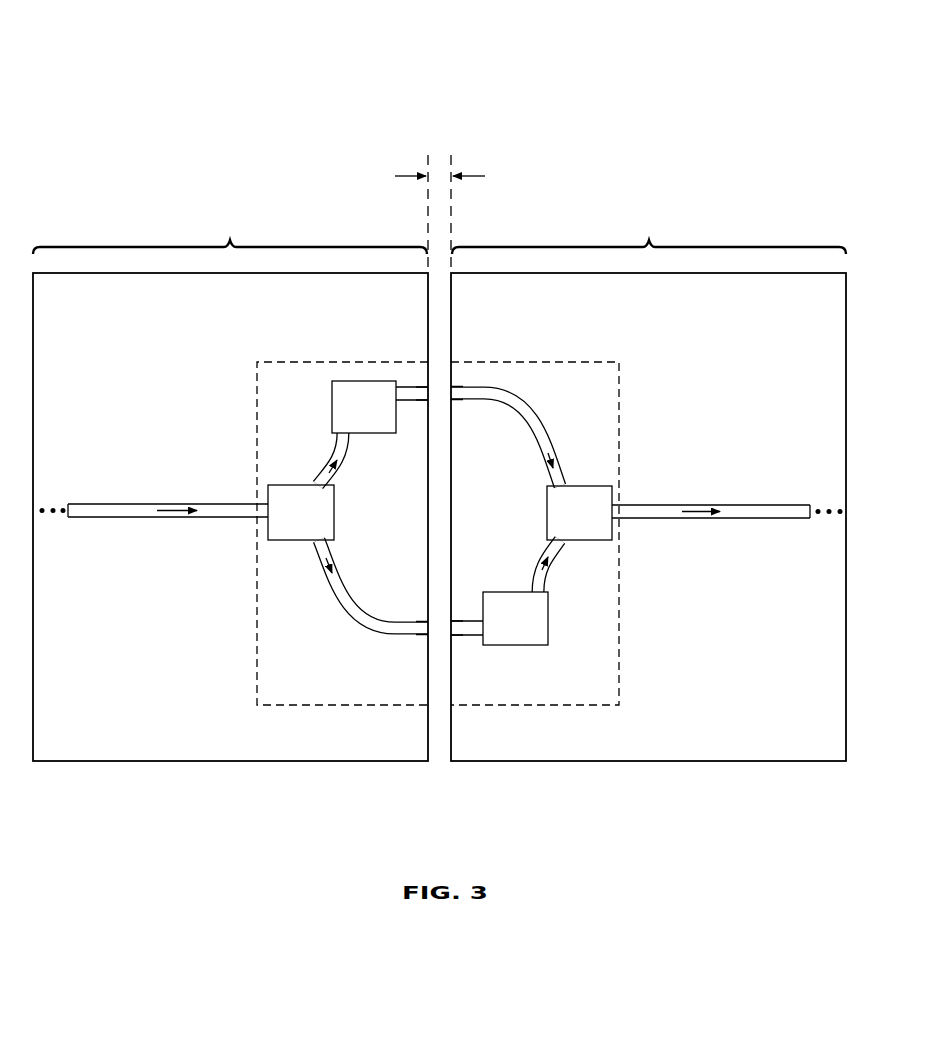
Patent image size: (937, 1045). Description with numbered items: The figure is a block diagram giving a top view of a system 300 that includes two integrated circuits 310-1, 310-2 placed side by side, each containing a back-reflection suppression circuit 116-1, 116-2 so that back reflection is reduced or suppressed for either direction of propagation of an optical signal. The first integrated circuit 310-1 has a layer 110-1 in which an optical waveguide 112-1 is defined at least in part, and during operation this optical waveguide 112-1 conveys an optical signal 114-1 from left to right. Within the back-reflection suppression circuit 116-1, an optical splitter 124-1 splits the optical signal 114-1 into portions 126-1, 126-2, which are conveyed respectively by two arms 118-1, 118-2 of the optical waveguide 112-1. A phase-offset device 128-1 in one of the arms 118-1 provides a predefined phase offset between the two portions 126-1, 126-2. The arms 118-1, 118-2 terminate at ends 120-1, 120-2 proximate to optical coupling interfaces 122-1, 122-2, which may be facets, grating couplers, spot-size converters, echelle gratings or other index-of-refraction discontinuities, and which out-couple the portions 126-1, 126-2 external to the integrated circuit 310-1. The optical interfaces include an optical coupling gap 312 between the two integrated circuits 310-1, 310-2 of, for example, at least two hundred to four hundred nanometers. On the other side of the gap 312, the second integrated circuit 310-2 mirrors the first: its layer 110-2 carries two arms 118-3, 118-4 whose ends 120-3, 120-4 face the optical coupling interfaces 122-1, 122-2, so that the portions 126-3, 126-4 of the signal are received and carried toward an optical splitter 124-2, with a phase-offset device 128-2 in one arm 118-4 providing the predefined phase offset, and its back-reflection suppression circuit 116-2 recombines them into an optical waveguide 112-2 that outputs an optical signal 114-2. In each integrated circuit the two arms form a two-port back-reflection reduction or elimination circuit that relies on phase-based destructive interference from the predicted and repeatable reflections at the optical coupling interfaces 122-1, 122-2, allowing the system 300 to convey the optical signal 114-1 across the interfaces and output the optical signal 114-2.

The system 300 is at (177, 45).
The optical coupling gap 312 is at (438, 157).
The integrated circuit 310-1 is at (230, 211).
The integrated circuit 310-2 is at (649, 211).
The layer 110-1 is at (87, 323).
The layer 110-2 is at (791, 323).
The optical waveguide 112-1 is at (135, 503).
The optical waveguide 112-2 is at (747, 504).
The optical signal 114-1 is at (168, 515).
The optical signal 114-2 is at (717, 517).
The back-reflection suppression circuit 116-1 is at (388, 705).
The back-reflection suppression circuit 116-2 is at (495, 705).
The arm 118-1 is at (333, 450).
The arm 118-2 is at (332, 589).
The arm 118-3 is at (544, 430).
The arm 118-4 is at (547, 578).
The end 120-1 is at (425, 397).
The end 120-2 is at (423, 627).
The end 120-3 is at (457, 403).
The end 120-4 is at (457, 627).
The optical coupling interface 122-1 is at (429, 393).
The optical coupling interface 122-2 is at (430, 627).
The optical splitter 124-1 is at (278, 533).
The optical splitter 124-2 is at (556, 533).
The portion 126-1 is at (325, 469).
The portion 126-2 is at (321, 559).
The portion 126-3 is at (557, 461).
The portion 126-4 is at (551, 564).
The phase-offset device 128-1 is at (341, 427).
The phase-offset device 128-2 is at (492, 640).